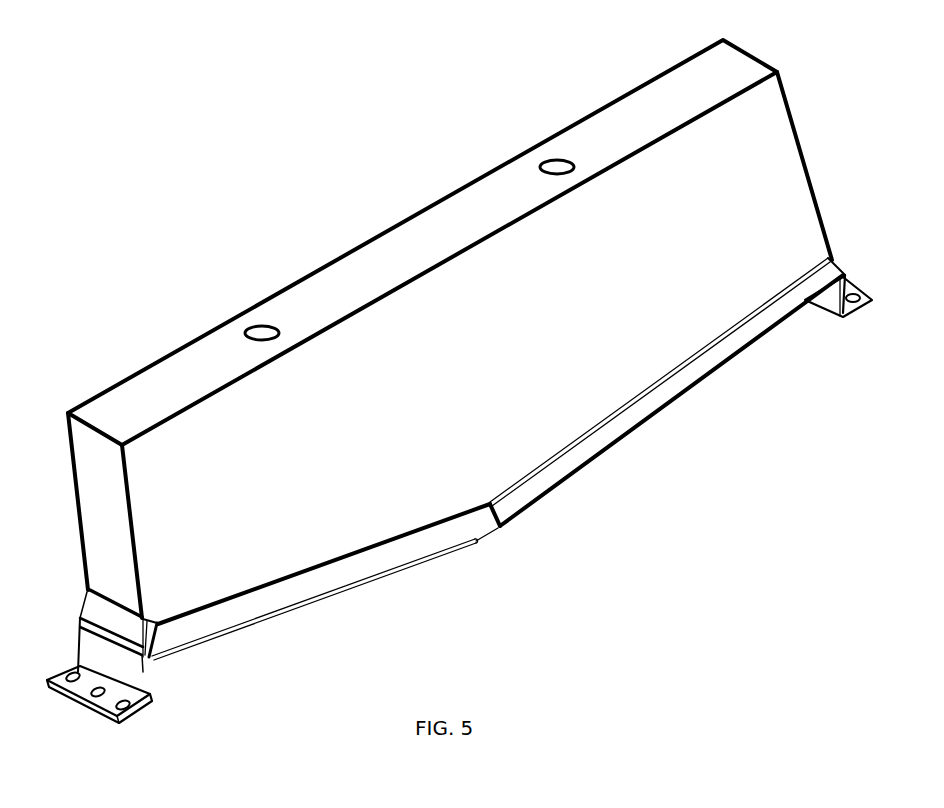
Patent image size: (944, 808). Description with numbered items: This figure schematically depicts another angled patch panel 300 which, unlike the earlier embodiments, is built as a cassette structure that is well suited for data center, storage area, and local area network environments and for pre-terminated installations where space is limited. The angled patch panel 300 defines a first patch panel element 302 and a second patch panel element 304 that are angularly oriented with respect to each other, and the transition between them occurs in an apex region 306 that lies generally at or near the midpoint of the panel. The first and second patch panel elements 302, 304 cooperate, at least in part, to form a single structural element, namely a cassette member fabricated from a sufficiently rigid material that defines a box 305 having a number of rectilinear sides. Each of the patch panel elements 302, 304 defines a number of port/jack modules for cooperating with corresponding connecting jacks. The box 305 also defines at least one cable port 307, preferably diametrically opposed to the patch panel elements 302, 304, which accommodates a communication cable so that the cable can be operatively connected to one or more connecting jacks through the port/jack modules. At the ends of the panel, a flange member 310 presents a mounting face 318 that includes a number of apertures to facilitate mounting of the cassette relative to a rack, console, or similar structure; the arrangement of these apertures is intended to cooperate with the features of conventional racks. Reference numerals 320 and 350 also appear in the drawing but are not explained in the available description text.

The angled patch panel 300 is at (270, 207).
The first patch panel element 302 is at (610, 428).
The second patch panel element 304 is at (258, 603).
The box 305 is at (483, 193).
The apex region 306 is at (500, 527).
The cable port 307 is at (557, 165).
The flange member 310 is at (87, 643).
The mounting face 318 is at (148, 688).
The bracket flange 320 is at (100, 604).
The base plate 350 is at (110, 708).